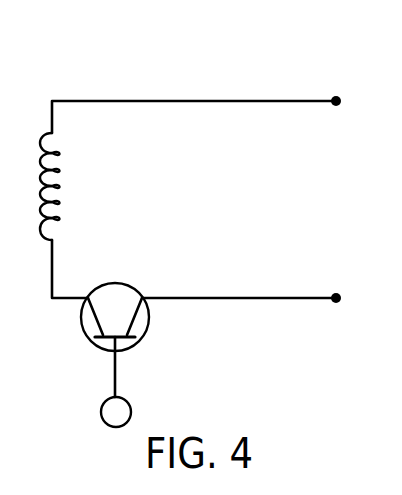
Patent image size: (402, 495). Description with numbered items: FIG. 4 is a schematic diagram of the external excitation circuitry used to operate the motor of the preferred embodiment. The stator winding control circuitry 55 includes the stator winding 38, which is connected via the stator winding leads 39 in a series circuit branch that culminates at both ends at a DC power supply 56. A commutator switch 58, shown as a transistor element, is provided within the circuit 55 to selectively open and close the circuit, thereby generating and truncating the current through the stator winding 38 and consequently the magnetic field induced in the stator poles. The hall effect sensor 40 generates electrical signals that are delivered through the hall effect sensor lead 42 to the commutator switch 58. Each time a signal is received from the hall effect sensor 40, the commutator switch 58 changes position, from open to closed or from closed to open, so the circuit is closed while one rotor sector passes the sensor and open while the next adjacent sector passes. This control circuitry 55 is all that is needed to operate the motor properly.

The stator winding 38 is at (57, 183).
The stator winding lead 39 is at (117, 100).
The hall effect sensor 40 is at (128, 402).
The hall effect sensor lead 42 is at (114, 377).
The stator winding control circuitry 55 is at (228, 78).
The DC power supply 56 is at (334, 106).
The commutator switch 58 is at (126, 281).